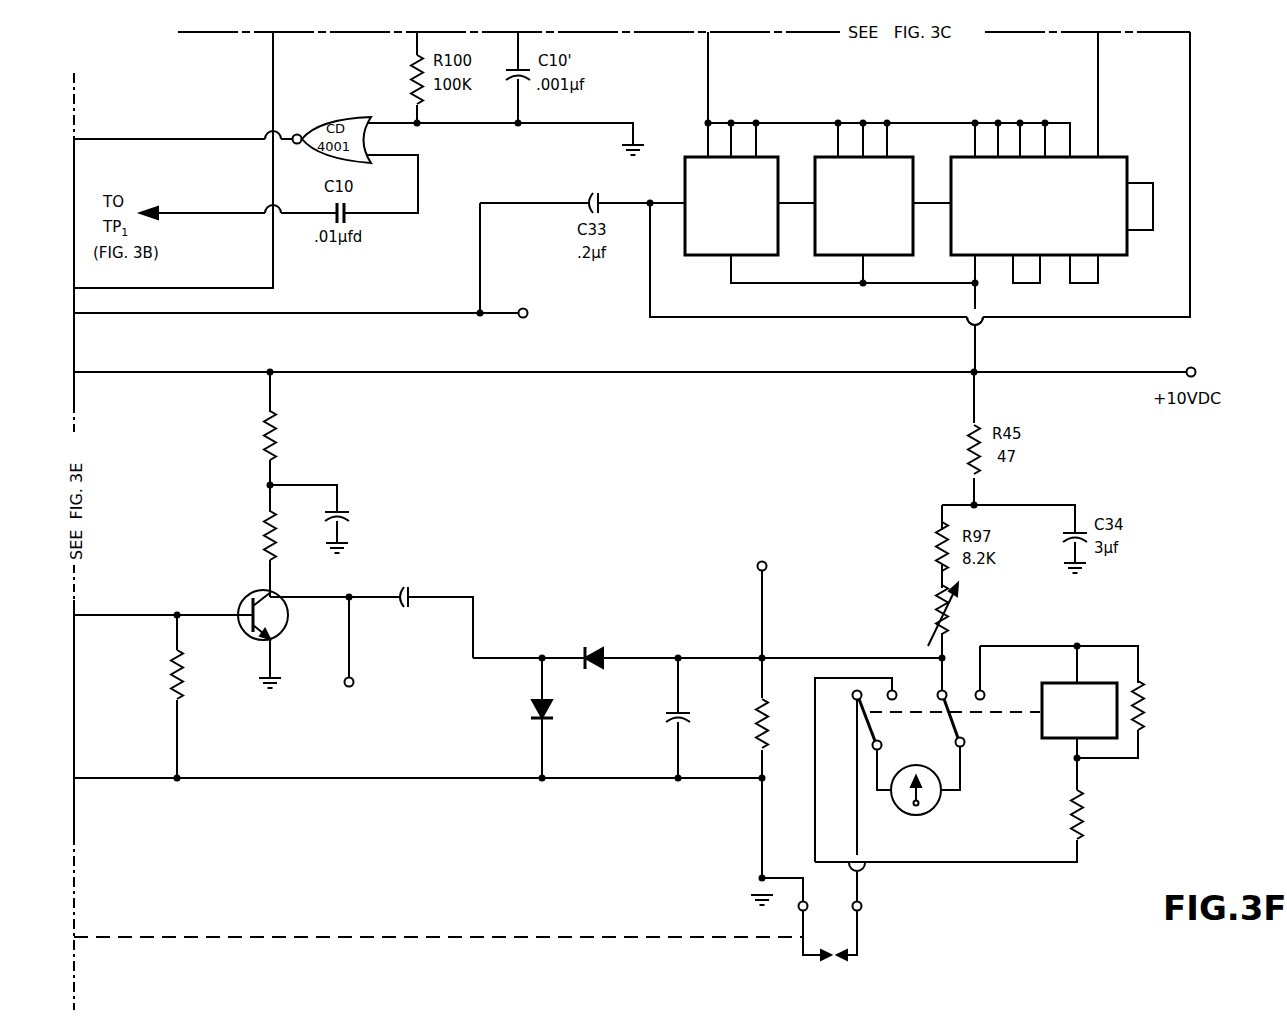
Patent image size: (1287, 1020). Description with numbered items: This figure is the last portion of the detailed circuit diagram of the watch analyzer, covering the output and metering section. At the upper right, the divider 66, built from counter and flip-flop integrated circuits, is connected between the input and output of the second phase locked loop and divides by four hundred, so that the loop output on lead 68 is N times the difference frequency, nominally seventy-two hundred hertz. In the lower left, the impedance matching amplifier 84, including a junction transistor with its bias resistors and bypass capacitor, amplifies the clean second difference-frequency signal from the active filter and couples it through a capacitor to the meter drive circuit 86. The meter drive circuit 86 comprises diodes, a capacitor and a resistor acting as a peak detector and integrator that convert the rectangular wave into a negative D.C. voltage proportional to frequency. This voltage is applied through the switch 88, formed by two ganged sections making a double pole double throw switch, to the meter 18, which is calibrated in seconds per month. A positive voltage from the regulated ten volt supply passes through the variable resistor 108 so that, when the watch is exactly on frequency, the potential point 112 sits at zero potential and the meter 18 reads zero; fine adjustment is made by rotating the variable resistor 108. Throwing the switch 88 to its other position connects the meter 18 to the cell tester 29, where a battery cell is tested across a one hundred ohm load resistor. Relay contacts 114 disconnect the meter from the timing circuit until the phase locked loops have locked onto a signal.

The divider 66 is at (952, 115).
The lead 68 is at (376, 313).
The amplifier 84 is at (201, 549).
The meter drive circuit 86 is at (645, 568).
The switch 88 is at (970, 745).
The variable resistor 108 is at (940, 605).
The potential point 112 is at (940, 655).
The relay contacts 114 is at (808, 958).
The meter 18 is at (901, 801).
The cell tester 29 is at (1046, 686).